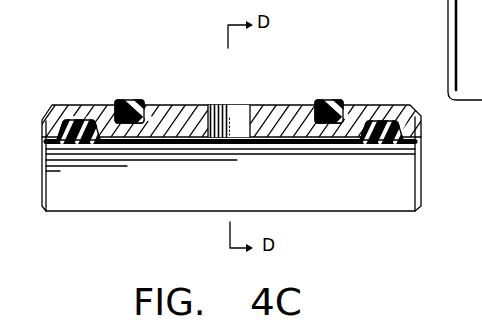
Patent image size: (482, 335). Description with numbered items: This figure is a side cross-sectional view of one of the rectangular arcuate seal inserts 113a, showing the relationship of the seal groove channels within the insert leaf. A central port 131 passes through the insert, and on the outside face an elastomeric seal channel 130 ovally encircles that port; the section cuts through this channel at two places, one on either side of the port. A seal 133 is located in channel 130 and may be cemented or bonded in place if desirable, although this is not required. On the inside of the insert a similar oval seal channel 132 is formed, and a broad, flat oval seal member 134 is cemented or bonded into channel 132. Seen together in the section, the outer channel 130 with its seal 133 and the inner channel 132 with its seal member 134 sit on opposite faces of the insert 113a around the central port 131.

The rectangular arcuate seal insert 113a is at (358, 105).
The elastomeric seal channel 130 is at (141, 85).
The central port 131 is at (235, 115).
The oval seal channel 132 is at (388, 133).
The seal 133 is at (118, 103).
The broad, flat oval seal member 134 is at (372, 143).